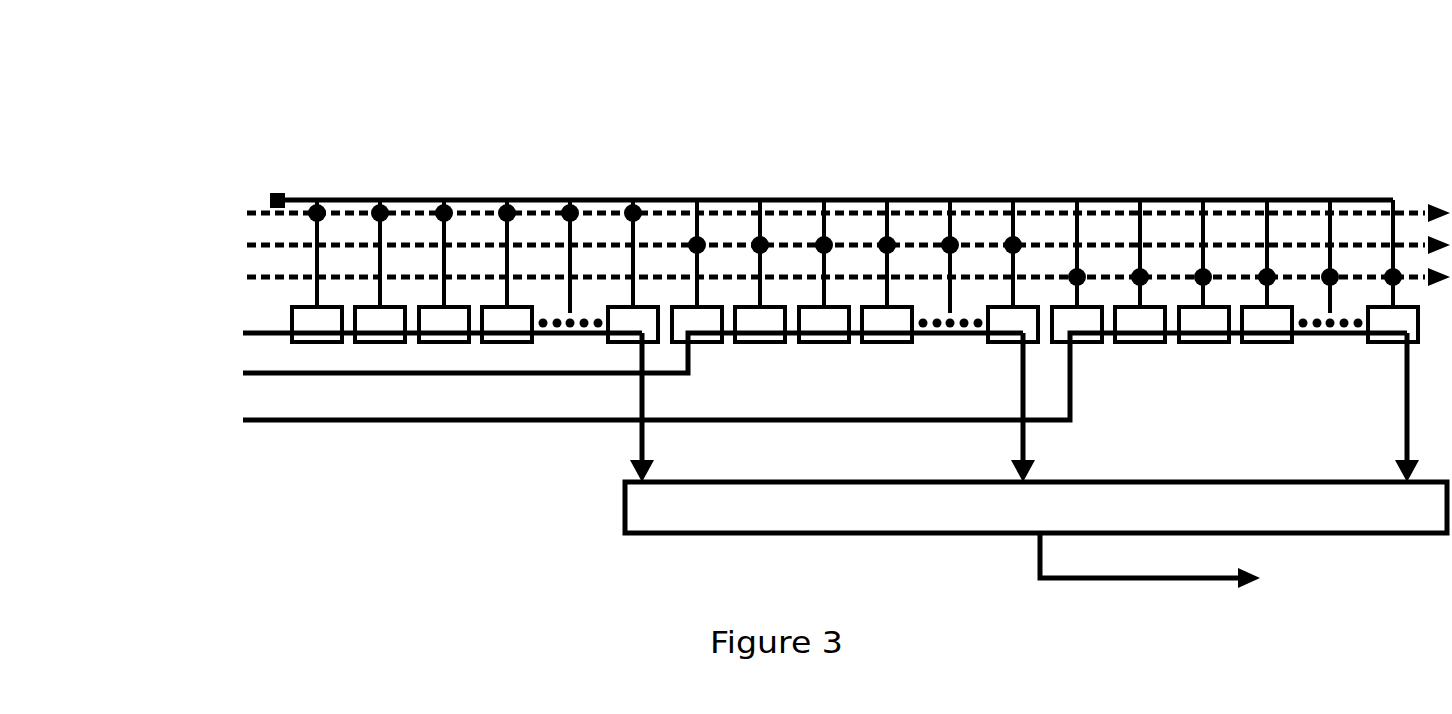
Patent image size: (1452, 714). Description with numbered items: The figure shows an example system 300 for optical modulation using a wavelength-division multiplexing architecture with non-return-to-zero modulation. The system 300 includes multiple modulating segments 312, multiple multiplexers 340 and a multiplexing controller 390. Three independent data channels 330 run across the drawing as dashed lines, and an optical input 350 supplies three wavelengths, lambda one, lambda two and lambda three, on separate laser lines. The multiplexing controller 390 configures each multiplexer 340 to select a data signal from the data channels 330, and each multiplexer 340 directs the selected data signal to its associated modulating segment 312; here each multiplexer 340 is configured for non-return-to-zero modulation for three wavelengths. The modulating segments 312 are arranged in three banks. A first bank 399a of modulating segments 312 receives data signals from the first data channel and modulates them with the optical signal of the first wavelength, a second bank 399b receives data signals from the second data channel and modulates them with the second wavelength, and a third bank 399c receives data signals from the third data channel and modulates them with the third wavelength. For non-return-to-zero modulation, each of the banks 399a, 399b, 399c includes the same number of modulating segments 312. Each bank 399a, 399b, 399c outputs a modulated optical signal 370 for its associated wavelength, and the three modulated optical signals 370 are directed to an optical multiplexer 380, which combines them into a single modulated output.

The system 300 is at (1222, 106).
The multiplexing controller 390 is at (349, 141).
The multiplexers 340 is at (760, 238).
The data channels 330 is at (155, 190).
The optical input 350 is at (153, 305).
The modulating segments 312 is at (441, 342).
The first bank of modulating segments 399a is at (658, 345).
The second bank of modulating segments 399b is at (1040, 345).
The third bank of modulating segments 399c is at (1420, 345).
The modulated optical signal 370 is at (646, 451).
The optical multiplexer 380 is at (1036, 535).